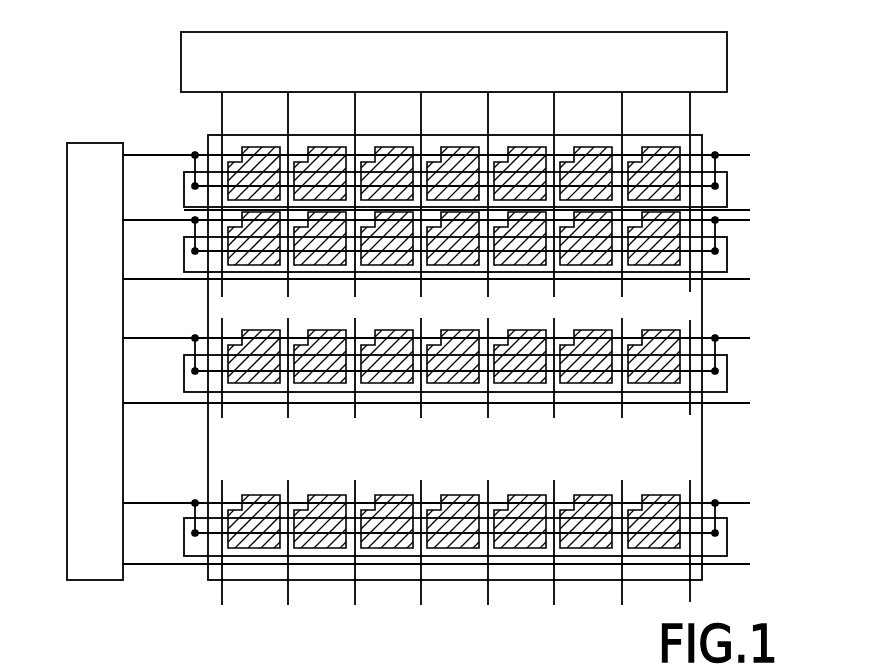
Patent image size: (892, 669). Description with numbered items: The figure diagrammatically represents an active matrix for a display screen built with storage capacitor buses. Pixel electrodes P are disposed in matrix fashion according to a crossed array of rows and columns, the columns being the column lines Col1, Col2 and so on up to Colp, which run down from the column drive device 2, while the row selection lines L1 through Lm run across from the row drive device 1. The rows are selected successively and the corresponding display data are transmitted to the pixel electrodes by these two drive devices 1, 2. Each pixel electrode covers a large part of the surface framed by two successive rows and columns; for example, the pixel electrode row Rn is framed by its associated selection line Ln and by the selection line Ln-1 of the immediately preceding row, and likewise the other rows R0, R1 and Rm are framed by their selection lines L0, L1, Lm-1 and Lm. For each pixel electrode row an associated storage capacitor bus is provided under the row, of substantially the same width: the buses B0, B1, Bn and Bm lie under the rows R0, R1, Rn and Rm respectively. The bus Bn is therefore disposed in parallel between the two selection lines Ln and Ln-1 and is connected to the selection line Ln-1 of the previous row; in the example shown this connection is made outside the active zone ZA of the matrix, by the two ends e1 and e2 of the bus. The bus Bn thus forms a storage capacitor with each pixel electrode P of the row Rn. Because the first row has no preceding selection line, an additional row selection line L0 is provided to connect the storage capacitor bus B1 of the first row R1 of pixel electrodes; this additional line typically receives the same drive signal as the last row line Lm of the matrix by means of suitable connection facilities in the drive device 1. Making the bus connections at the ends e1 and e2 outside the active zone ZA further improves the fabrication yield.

The drive device 1 is at (66, 216).
The drive device 2 is at (632, 32).
The active zone of the matrix ZA is at (702, 135).
The pixel electrode P is at (522, 268).
The end of the storage capacitor bus e1 is at (190, 186).
The end of the storage capacitor bus e2 is at (720, 187).
The additional row selection line L0 is at (143, 152).
The row selection line L1 is at (143, 221).
The selection line of the immediately preceding row Ln-1 is at (142, 339).
The selection line Ln is at (160, 404).
The row selection line Lm-1 is at (140, 504).
The last row selection line Lm is at (170, 564).
The column Col1 is at (230, 114).
The column Col2 is at (296, 114).
The column Colp is at (690, 120).
The pixel electrode row R0 is at (491, 203).
The first row of pixel electrodes R1 is at (510, 268).
The pixel electrode row Rn is at (512, 386).
The last row of pixel electrodes Rm is at (515, 551).
The storage capacitor bus B0 is at (727, 200).
The storage capacitor bus of the first row B1 is at (727, 270).
The storage capacitor bus Bn is at (727, 390).
The storage capacitor bus Bm is at (727, 540).